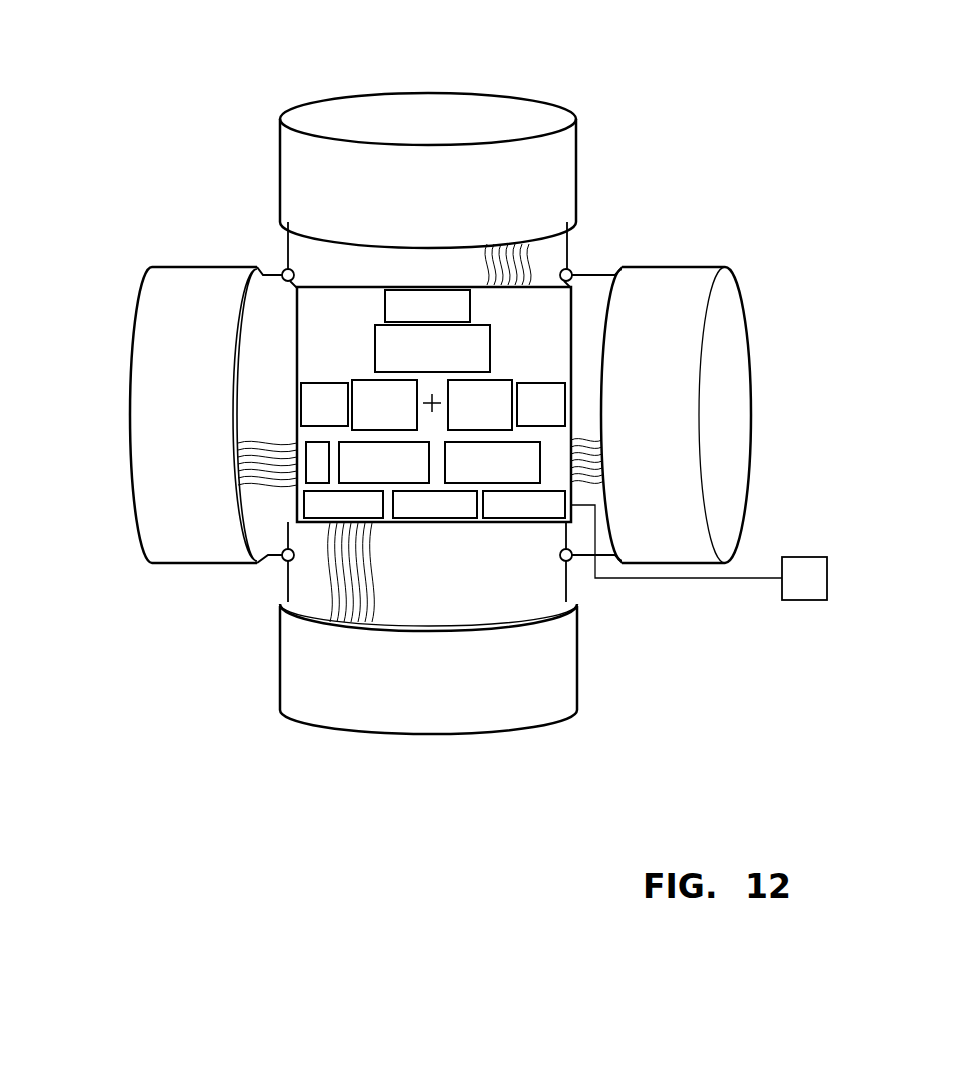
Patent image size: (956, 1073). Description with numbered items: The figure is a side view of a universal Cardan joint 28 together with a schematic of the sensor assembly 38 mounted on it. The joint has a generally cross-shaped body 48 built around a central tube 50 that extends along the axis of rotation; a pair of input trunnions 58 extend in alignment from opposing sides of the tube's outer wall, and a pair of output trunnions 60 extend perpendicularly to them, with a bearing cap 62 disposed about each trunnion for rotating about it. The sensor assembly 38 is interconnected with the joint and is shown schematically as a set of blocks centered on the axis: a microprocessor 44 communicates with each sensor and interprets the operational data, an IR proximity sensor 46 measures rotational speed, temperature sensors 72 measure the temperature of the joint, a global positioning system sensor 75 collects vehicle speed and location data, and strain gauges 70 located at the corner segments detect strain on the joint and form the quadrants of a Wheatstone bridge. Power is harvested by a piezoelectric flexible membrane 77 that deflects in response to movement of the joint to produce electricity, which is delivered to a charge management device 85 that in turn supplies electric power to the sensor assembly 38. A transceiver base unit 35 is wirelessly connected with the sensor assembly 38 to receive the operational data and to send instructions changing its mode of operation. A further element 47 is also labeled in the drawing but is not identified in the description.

The universal Cardan joint 28 is at (678, 94).
The transceiver base unit 35 is at (802, 590).
The sensor assembly 38 is at (500, 526).
The microprocessor 44 is at (478, 337).
The IR proximity sensor 46 is at (367, 392).
The connector 47 is at (283, 556).
The body 48 is at (607, 275).
The central tube 50 is at (286, 562).
The input trunnions 58 is at (320, 257).
The output trunnions 60 is at (313, 353).
The bearing cap 62 is at (405, 168).
The strain gauge 70 is at (283, 271).
The temperature sensor 72 is at (452, 300).
The global positioning system sensor 75 is at (315, 468).
The piezoelectric flexible membrane 77 is at (500, 252).
The charge management device 85 is at (528, 463).